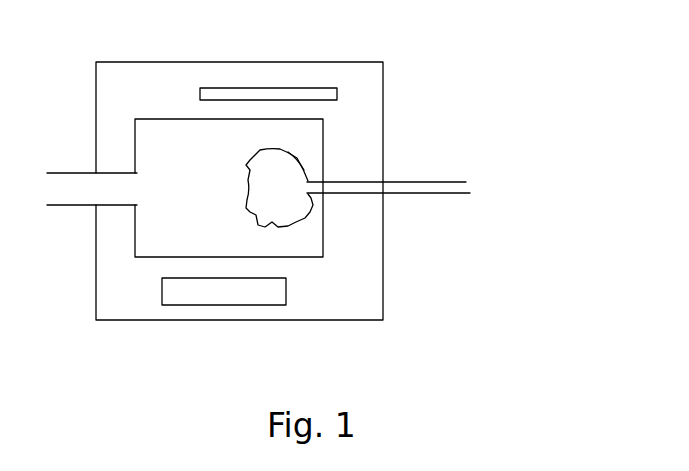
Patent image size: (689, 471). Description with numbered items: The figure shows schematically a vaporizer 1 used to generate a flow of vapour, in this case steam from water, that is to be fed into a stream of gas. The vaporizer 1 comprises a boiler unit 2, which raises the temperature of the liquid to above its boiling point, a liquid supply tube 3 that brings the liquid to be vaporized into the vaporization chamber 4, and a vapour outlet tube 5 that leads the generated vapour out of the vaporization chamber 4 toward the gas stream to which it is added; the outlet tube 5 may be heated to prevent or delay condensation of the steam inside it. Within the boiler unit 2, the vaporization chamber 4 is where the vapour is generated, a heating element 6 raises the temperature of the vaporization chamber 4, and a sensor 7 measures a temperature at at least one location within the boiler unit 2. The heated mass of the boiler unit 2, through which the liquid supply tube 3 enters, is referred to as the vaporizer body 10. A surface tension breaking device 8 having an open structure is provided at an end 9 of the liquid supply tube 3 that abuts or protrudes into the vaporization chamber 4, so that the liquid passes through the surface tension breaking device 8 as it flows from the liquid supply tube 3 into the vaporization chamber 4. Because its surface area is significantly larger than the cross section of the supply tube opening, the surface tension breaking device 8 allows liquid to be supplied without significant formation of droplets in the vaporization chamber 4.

The vaporizer 1 is at (531, 93).
The boiler unit 2 is at (174, 49).
The liquid supply tube 3 is at (415, 182).
The vaporization chamber 4 is at (178, 143).
The vapour outlet tube 5 is at (60, 207).
The heating element 6 is at (224, 293).
The sensor 7 is at (337, 94).
The surface tension breaking device 8 is at (290, 200).
The end of the liquid supply tube 9 is at (310, 180).
The vaporizer body 10 is at (368, 291).